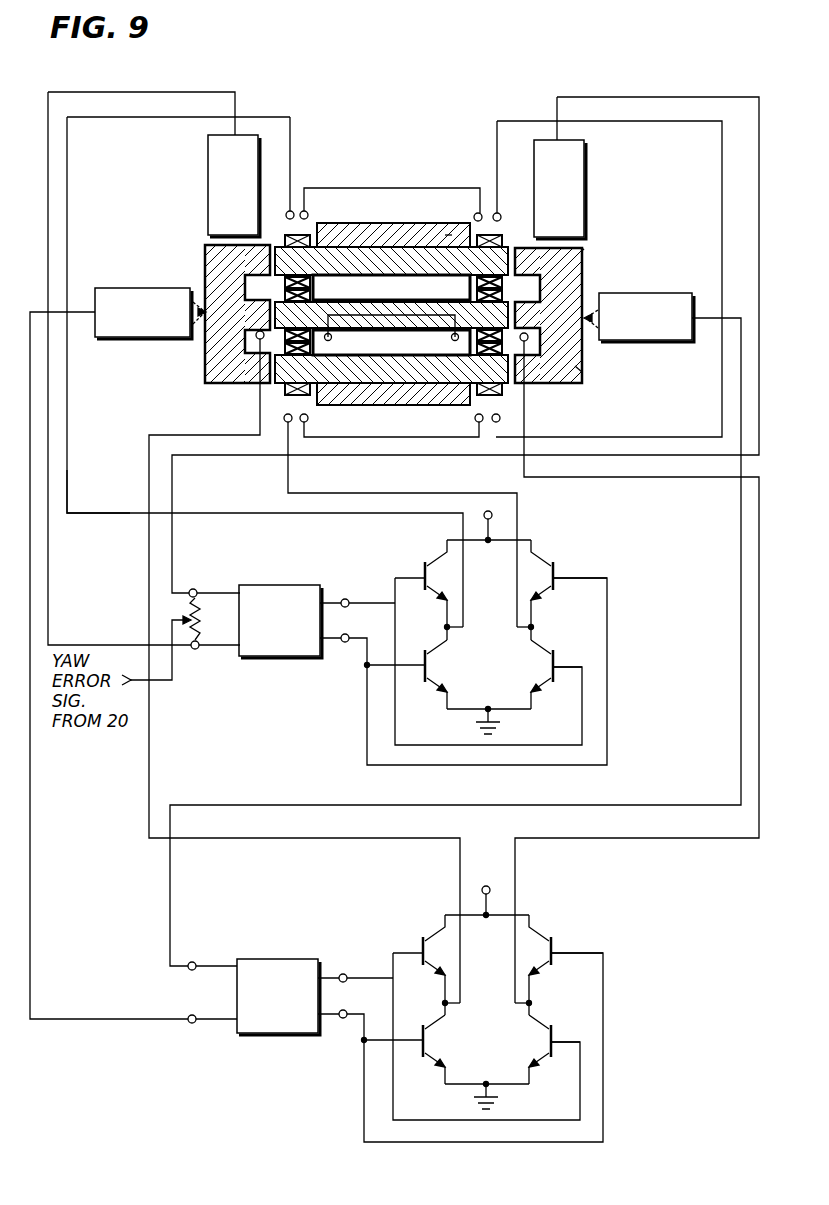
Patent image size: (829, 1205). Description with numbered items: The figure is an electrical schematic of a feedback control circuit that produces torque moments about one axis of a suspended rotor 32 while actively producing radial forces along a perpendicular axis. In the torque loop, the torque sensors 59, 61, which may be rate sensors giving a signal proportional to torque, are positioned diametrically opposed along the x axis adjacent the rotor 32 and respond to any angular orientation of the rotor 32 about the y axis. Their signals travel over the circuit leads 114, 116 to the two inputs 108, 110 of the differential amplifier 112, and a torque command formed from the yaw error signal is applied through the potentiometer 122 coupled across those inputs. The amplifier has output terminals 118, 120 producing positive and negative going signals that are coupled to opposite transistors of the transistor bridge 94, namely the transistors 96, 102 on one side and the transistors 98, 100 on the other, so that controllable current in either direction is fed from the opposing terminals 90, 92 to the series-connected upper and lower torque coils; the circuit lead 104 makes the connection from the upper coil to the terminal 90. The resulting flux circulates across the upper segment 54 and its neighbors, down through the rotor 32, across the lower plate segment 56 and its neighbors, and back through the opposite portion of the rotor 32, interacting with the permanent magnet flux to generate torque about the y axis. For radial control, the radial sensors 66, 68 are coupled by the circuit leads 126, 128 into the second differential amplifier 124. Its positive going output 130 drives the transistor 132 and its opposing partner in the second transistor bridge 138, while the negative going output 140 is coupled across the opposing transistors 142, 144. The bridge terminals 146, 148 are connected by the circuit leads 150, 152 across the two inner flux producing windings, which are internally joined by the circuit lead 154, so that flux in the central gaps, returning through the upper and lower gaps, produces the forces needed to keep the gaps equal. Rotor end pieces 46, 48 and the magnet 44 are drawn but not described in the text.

The rotor 32 is at (590, 250).
The permanent magnet 44 is at (366, 342).
The rotor end piece 46 is at (398, 230).
The rotor end piece 48 is at (424, 400).
The upper segment 54 is at (320, 248).
The lower plate segment 56 is at (440, 394).
The torque sensor 59 is at (208, 184).
The torque sensor 61 is at (585, 167).
The radial sensor 66 is at (132, 288).
The radial sensor 68 is at (678, 293).
The terminal 90 is at (446, 627).
The terminal 92 is at (532, 627).
The transistor bridge 94 is at (500, 641).
The transistor 96 is at (420, 565).
The transistor 98 is at (420, 688).
The transistor 100 is at (556, 565).
The transistor 102 is at (560, 679).
The circuit lead 104 is at (125, 513).
The input 108 is at (191, 590).
The input 110 is at (196, 650).
The differential amplifier 112 is at (311, 585).
The circuit lead 114 is at (157, 92).
The circuit lead 116 is at (630, 97).
The output terminal 118 is at (346, 598).
The output terminal 120 is at (346, 646).
The potentiometer 122 is at (198, 616).
The second differential amplifier 124 is at (266, 959).
The circuit lead 126 is at (268, 805).
The circuit lead 128 is at (30, 928).
The positive going output 130 is at (344, 972).
The transistor 132 is at (424, 930).
The second transistor bridge 138 is at (500, 1036).
The negative going output 140 is at (343, 1020).
The transistor 142 is at (420, 1064).
The transistor 144 is at (544, 930).
The bridge terminal 146 is at (444, 1003).
The bridge terminal 148 is at (530, 1003).
The circuit lead 150 is at (248, 838).
The circuit lead 152 is at (659, 839).
The circuit lead 154 is at (357, 303).